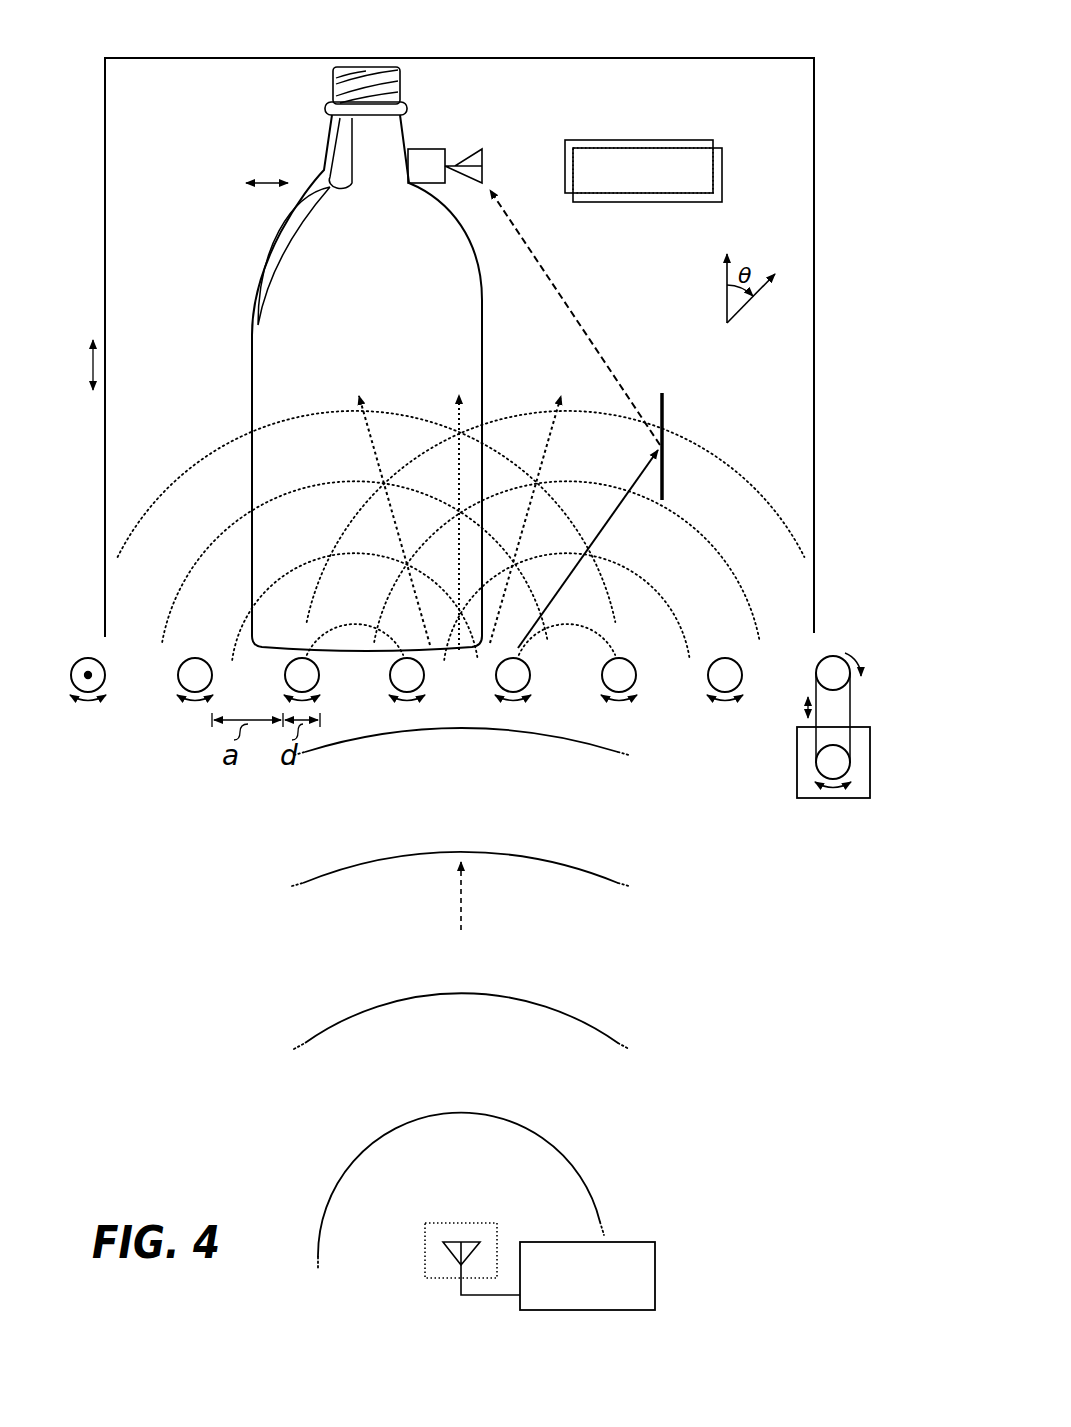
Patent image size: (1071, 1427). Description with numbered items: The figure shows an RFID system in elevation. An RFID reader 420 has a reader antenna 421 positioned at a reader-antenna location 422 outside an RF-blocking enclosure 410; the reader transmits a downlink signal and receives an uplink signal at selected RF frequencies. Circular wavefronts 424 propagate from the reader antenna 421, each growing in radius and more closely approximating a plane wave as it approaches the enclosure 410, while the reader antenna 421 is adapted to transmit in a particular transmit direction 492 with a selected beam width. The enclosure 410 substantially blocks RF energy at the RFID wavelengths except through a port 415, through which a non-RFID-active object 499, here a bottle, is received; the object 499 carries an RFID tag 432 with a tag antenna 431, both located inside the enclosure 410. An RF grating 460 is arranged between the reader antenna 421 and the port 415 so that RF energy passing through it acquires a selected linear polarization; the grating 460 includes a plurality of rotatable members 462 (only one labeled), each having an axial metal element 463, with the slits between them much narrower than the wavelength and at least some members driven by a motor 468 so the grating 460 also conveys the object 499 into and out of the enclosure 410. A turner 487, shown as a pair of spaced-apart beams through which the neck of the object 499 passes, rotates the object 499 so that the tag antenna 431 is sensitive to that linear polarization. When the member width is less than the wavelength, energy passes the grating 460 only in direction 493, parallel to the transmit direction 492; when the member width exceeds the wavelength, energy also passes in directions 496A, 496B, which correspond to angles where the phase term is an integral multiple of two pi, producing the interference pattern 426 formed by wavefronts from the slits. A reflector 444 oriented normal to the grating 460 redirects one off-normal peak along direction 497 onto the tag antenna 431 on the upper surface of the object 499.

The RF-blocking enclosure 410 is at (282, 57).
The port 415 is at (662, 688).
The non-RFID-active object 499 is at (258, 263).
The RFID tag 432 is at (422, 149).
The tag antenna 431 is at (480, 149).
The turner 487 is at (654, 140).
The direction 497 is at (586, 322).
The reflector 444 is at (664, 412).
The interference pattern 426 is at (230, 416).
The direction 496A is at (376, 464).
The direction 493 is at (458, 470).
The direction 496B is at (548, 468).
The RF grating 460 is at (395, 688).
The rotatable member 462 is at (106, 674).
The axial metal element 463 is at (86, 674).
The motor 468 is at (833, 799).
The circular wavefront 424 is at (344, 740).
The transmit direction 492 is at (465, 882).
The RFID reader 420 is at (655, 1275).
The reader-antenna location 422 is at (425, 1244).
The reader antenna 421 is at (443, 1246).